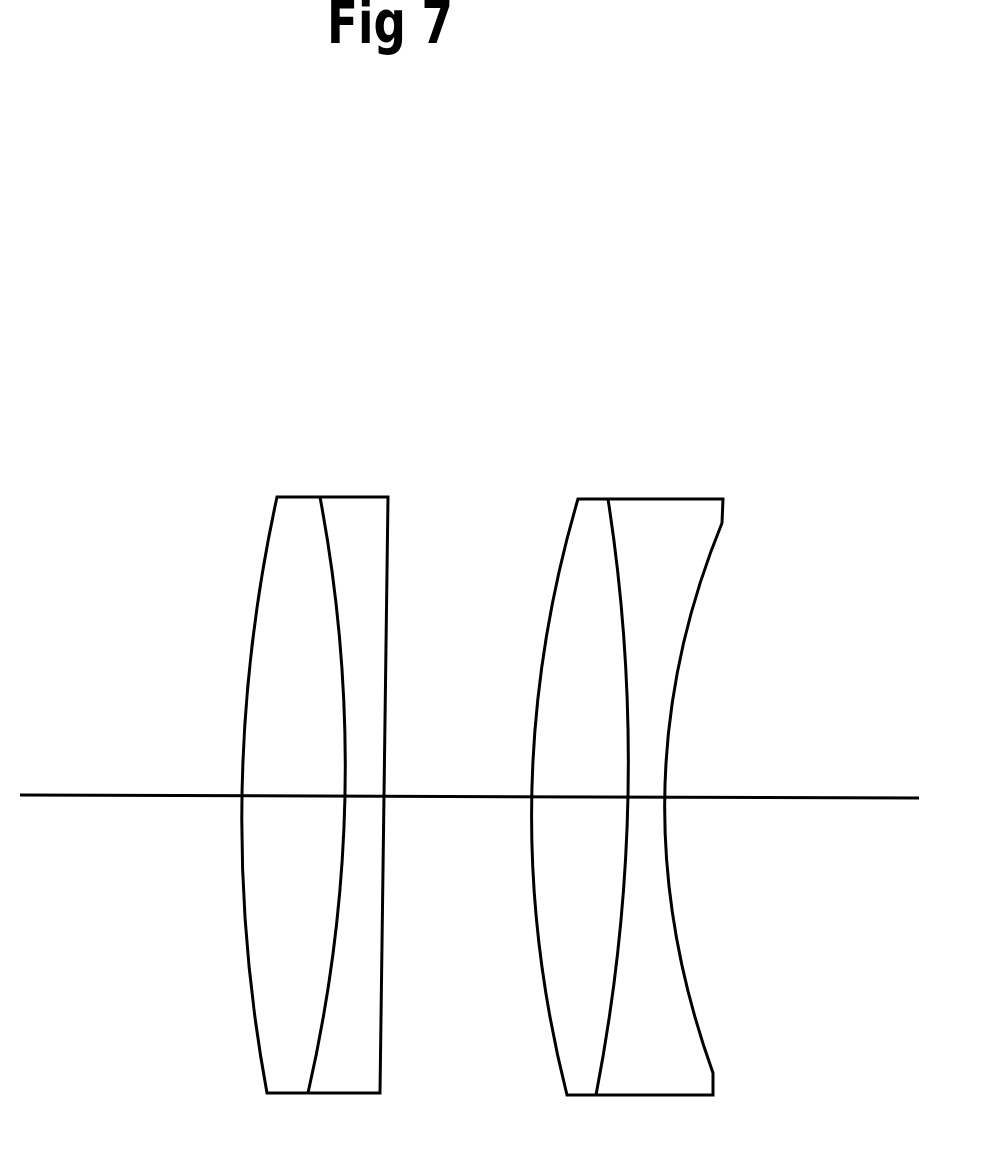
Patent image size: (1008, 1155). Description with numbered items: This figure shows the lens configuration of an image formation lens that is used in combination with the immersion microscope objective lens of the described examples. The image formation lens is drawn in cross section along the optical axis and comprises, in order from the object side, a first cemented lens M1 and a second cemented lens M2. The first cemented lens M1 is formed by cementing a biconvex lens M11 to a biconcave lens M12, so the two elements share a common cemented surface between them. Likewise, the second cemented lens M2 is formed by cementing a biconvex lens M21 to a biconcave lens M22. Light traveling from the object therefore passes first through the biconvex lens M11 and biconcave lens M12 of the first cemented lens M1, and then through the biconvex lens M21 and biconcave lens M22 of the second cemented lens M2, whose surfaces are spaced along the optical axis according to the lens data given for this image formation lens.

The first cemented lens M1 is at (460, 392).
The biconvex lens M11 is at (295, 507).
The biconcave lens M12 is at (358, 507).
The second cemented lens M2 is at (767, 398).
The biconvex lens M21 is at (590, 510).
The biconcave lens M22 is at (672, 510).